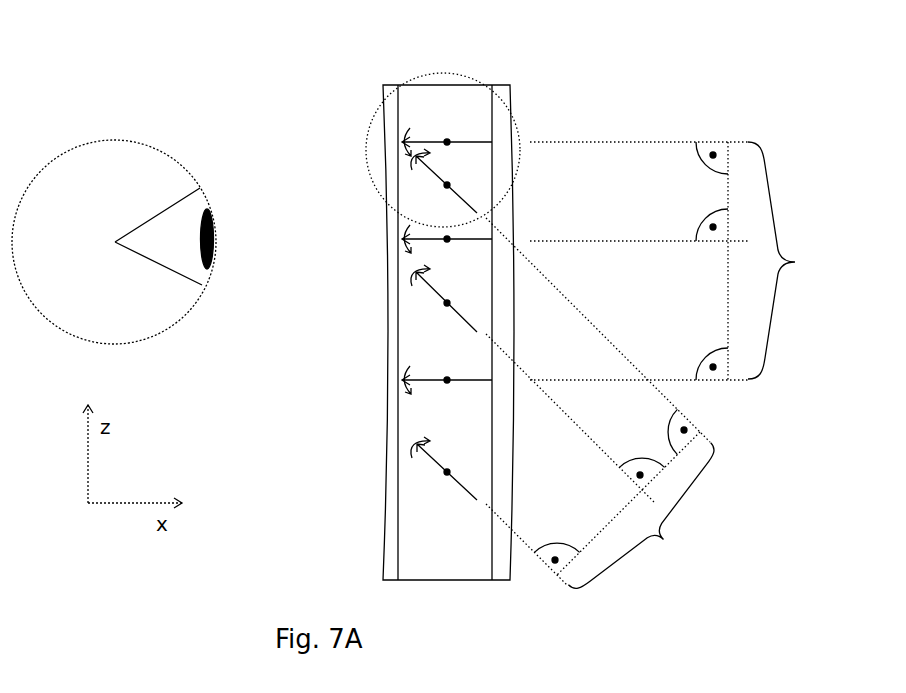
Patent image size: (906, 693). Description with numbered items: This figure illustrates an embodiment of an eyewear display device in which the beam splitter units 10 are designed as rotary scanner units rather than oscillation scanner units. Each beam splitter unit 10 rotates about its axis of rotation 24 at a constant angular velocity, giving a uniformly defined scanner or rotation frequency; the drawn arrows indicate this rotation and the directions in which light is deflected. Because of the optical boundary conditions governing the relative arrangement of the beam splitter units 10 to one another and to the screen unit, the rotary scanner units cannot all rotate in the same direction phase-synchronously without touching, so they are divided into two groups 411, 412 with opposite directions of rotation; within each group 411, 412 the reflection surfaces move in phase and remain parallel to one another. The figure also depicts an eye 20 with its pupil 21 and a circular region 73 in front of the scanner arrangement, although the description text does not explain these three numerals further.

The eye 20 is at (117, 140).
The pupil 21 is at (215, 232).
The eyebox region 73 is at (422, 76).
The beam splitter unit 10 is at (433, 457).
The axis of rotation 24 is at (453, 470).
The first group of beam splitter units 411 is at (695, 261).
The second group of beam splitter units 412 is at (601, 403).